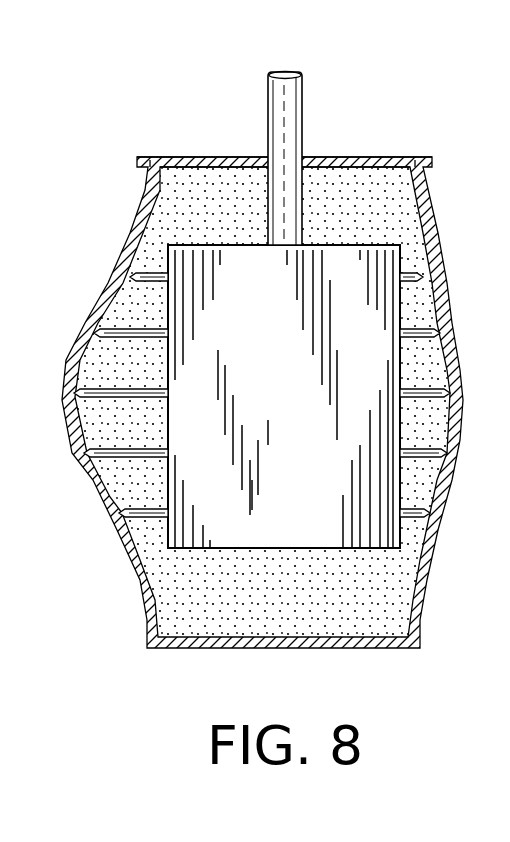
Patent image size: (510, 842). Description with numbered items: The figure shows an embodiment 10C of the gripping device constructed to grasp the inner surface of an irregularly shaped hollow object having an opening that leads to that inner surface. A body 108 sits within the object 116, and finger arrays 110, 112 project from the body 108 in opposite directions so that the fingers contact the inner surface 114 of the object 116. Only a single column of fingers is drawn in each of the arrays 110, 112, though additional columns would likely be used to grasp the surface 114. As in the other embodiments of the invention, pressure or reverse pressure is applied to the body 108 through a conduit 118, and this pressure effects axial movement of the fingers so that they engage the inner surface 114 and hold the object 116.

The body 108 is at (306, 394).
The finger array 110 is at (168, 247).
The finger array 112 is at (412, 268).
The inner surface 114 is at (160, 268).
The object 116 is at (137, 241).
The conduit 118 is at (303, 87).
The embodiment 10C is at (355, 198).